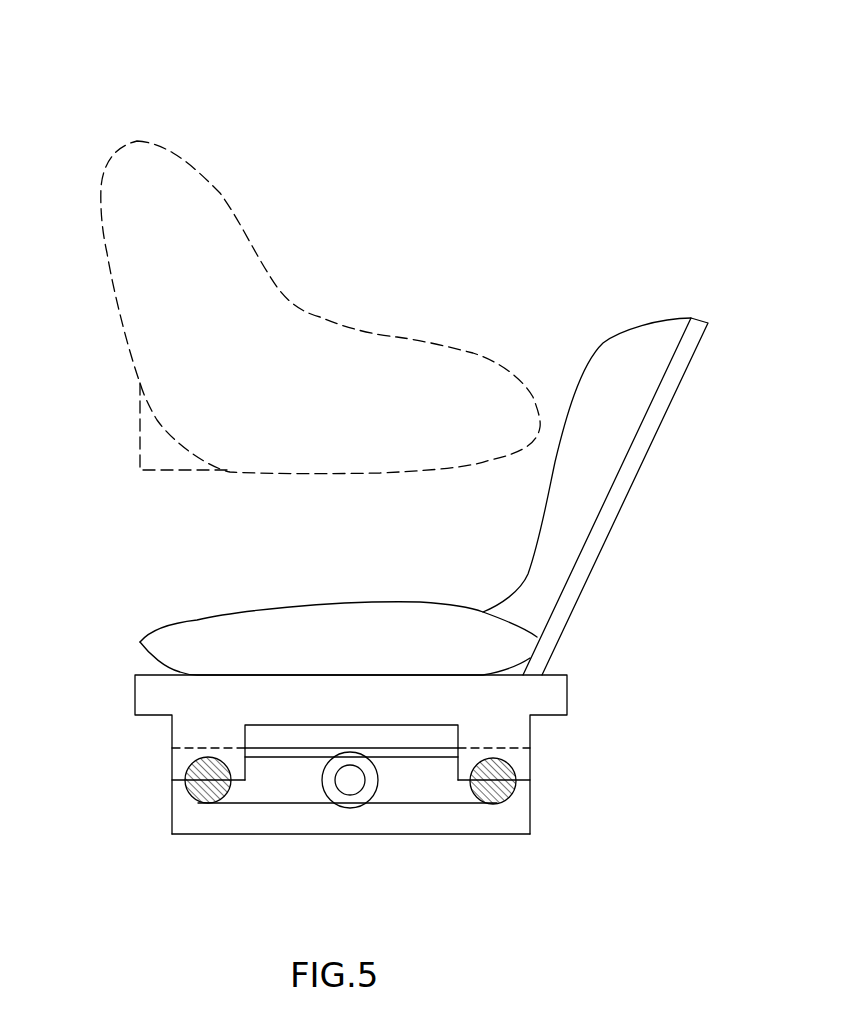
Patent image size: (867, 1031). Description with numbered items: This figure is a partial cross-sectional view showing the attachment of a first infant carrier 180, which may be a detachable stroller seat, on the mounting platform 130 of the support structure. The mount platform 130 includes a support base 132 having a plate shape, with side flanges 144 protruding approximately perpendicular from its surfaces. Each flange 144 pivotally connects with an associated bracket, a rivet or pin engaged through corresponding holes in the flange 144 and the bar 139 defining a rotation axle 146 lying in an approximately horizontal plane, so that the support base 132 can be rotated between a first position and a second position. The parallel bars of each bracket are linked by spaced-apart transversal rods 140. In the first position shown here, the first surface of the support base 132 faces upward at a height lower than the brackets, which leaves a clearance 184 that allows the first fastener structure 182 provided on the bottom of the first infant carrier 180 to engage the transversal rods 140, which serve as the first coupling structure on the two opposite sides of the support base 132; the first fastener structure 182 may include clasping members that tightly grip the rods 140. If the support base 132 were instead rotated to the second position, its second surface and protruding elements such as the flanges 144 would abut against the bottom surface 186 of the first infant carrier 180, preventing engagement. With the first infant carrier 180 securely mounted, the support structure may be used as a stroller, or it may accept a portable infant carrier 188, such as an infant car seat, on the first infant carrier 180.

The mount platform 130 is at (617, 822).
The support base 132 is at (172, 822).
The bar 139 is at (400, 792).
The transversal rods 140 is at (185, 790).
The side flanges 144 is at (470, 823).
The rotation axle 146 is at (333, 795).
The first infant carrier 180 is at (676, 274).
The first fastener structure 182 is at (182, 733).
The clearance 184 is at (292, 727).
The bottom surface 186 is at (352, 725).
The portable infant carrier 188 is at (195, 110).